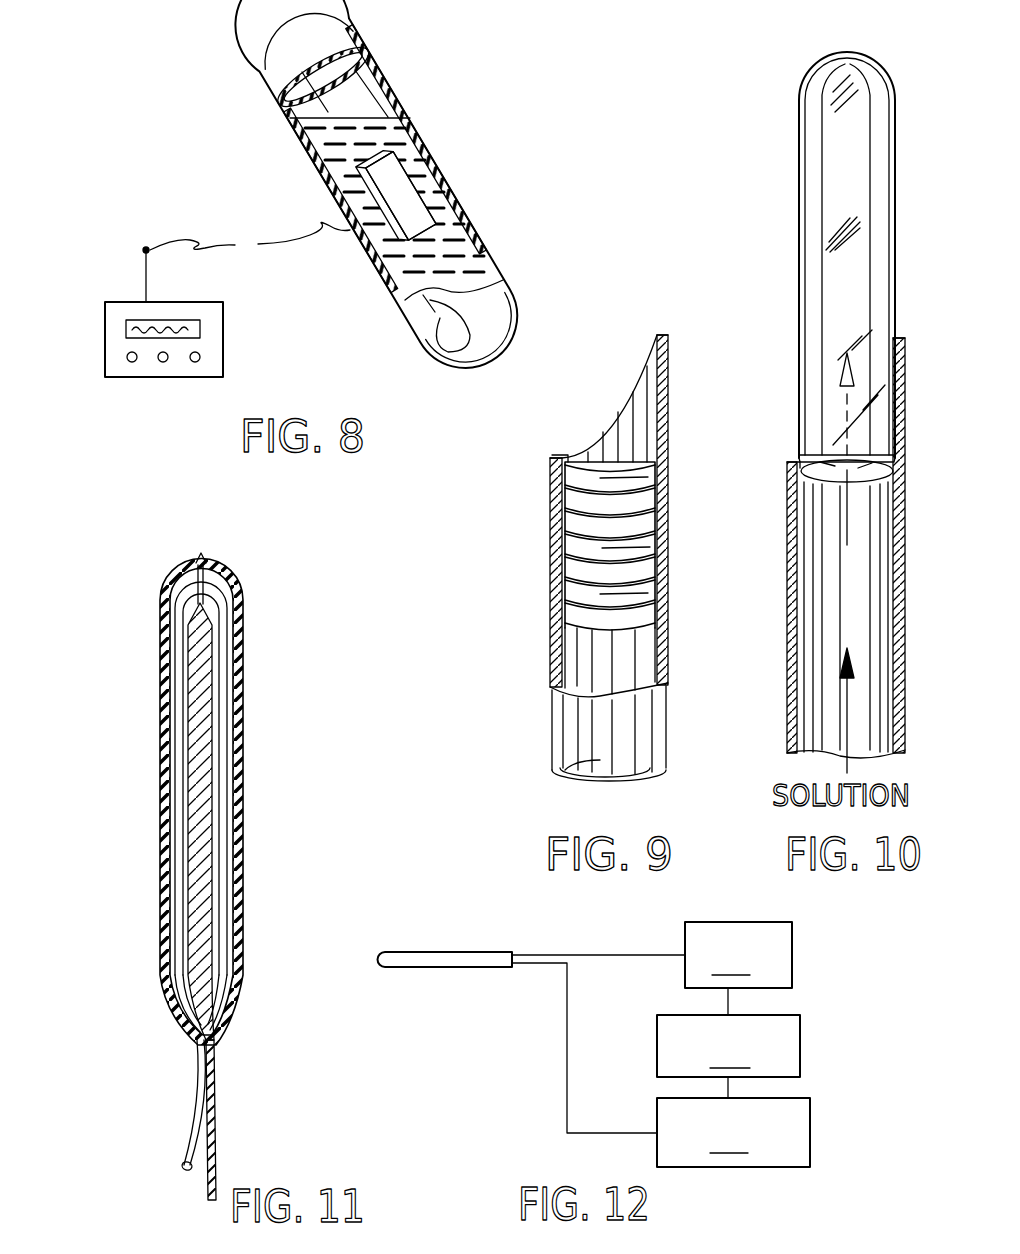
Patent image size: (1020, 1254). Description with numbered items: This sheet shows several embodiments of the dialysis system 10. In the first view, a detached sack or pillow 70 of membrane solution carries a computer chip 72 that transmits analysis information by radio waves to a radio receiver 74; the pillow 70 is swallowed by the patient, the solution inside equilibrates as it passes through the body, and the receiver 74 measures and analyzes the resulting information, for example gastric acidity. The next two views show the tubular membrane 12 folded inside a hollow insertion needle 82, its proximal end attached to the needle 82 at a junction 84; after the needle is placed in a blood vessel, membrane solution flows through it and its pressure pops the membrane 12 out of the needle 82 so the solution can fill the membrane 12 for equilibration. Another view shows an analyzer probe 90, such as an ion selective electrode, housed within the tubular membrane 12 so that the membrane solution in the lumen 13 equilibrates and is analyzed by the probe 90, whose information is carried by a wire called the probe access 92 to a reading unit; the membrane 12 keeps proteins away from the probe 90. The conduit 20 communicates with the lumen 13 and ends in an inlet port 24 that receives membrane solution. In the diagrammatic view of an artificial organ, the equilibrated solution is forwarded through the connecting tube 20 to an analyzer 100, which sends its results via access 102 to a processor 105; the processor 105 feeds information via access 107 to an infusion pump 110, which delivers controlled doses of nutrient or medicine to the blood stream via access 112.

In FIG. 11, the dialysis system 10 is at (191, 876).
In FIG. 12, the dialysis system 10 is at (430, 950).
In FIG. 8, the tubular membrane 12 is at (488, 246).
In FIG. 9, the tubular membrane 12 is at (585, 545).
In FIG. 11, the tubular membrane 12 is at (160, 726).
In FIG. 11, the lumen 13 is at (185, 848).
In FIG. 11, the conduit 20 is at (196, 1107).
In FIG. 12, the conduit 20 is at (580, 955).
In FIG. 11, the inlet port 24 is at (182, 1170).
In FIG. 8, the pillow 70 is at (453, 200).
In FIG. 8, the computer chip 72 is at (405, 190).
In FIG. 8, the radio receiver 74 is at (105, 327).
In FIG. 9, the hollow insertion needle 82 is at (575, 717).
In FIG. 9, the junction 84 is at (565, 462).
In FIG. 10, the junction 84 is at (785, 478).
In FIG. 11, the analyzer probe 90 is at (205, 727).
In FIG. 11, the probe access 92 is at (216, 1140).
In FIG. 12, the analyzer 100 is at (738, 955).
In FIG. 12, the access 102 is at (730, 1000).
In FIG. 12, the processor 105 is at (728, 1046).
In FIG. 12, the access 107 is at (730, 1087).
In FIG. 12, the infusion pump 110 is at (733, 1132).
In FIG. 12, the access 112 is at (567, 1085).